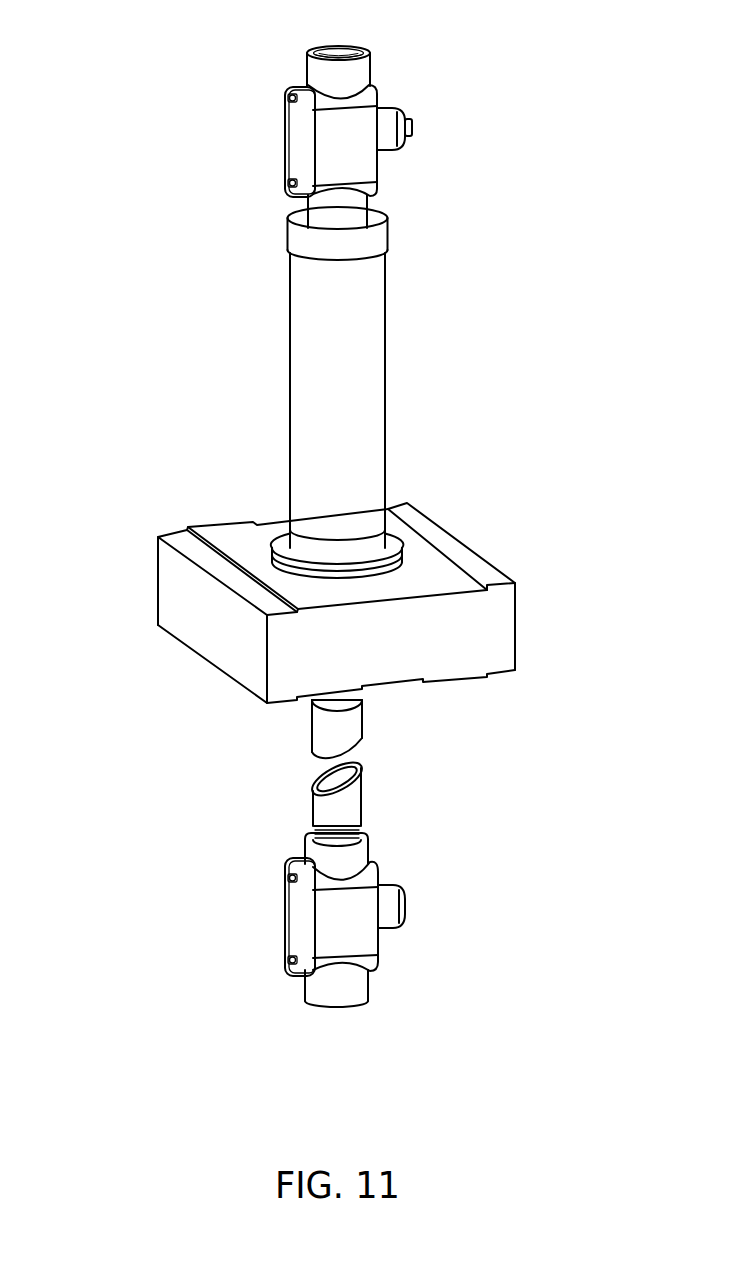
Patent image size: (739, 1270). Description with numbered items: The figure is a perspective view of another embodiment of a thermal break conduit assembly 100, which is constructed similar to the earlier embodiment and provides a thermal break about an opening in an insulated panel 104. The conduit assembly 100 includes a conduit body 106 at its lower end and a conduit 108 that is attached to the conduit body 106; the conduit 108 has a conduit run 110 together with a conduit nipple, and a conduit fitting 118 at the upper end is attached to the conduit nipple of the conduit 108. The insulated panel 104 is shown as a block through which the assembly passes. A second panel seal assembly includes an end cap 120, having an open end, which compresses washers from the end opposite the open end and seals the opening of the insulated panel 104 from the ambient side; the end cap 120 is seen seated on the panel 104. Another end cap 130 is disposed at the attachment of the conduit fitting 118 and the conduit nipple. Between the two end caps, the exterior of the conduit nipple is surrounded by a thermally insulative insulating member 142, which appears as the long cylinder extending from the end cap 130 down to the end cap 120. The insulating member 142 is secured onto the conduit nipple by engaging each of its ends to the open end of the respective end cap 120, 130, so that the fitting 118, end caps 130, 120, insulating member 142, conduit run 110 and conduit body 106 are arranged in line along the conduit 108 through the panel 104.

The conduit assembly 100 is at (236, 64).
The insulated panel 104 is at (503, 603).
The conduit body 106 is at (370, 947).
The conduit 108 is at (135, 383).
The conduit run 110 is at (352, 803).
The conduit fitting 118 is at (372, 94).
The end cap 120 is at (365, 547).
The end cap 130 is at (381, 238).
The insulating member 142 is at (377, 343).